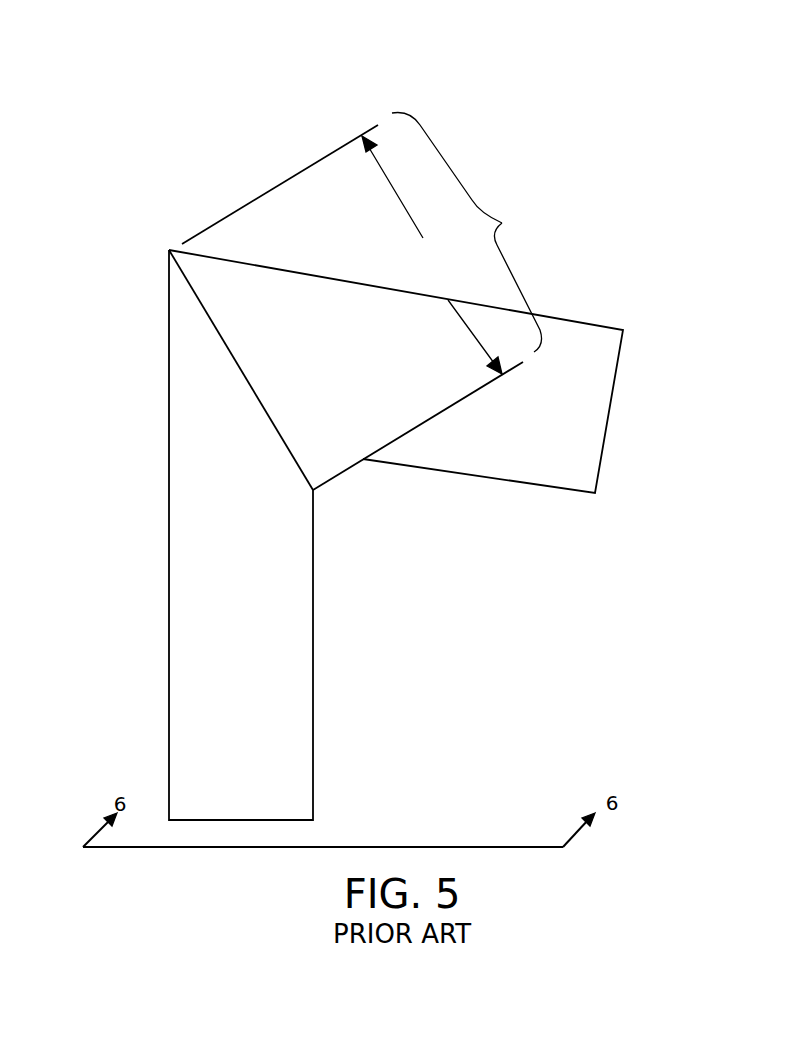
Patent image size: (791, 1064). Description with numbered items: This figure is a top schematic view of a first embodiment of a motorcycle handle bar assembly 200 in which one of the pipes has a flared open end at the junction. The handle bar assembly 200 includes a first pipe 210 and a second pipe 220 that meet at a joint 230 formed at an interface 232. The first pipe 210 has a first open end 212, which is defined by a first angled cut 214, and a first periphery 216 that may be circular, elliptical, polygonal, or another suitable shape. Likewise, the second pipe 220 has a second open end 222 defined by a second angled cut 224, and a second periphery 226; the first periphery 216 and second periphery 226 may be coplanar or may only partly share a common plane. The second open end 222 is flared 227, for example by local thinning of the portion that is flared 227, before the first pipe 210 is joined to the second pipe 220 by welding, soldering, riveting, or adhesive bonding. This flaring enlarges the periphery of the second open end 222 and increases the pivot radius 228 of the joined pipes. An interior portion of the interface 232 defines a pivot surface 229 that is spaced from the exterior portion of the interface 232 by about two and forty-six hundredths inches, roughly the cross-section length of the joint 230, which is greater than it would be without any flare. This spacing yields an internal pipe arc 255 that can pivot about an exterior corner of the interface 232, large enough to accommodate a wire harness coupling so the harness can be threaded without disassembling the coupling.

The handle bar assembly 200 is at (350, 68).
The first pipe 210 is at (169, 640).
The first open end 212 is at (184, 273).
The first angled cut 214 is at (207, 313).
The first periphery 216 is at (229, 352).
The second pipe 220 is at (593, 320).
The second open end 222 is at (253, 388).
The second angled cut 224 is at (277, 428).
The second periphery 226 is at (298, 467).
The flared portion 227 is at (320, 477).
The pivot radius 228 is at (362, 459).
The pivot surface 229 is at (315, 492).
The joint 230 is at (169, 250).
The interface 232 is at (169, 250).
The internal pipe arc 255 is at (502, 223).